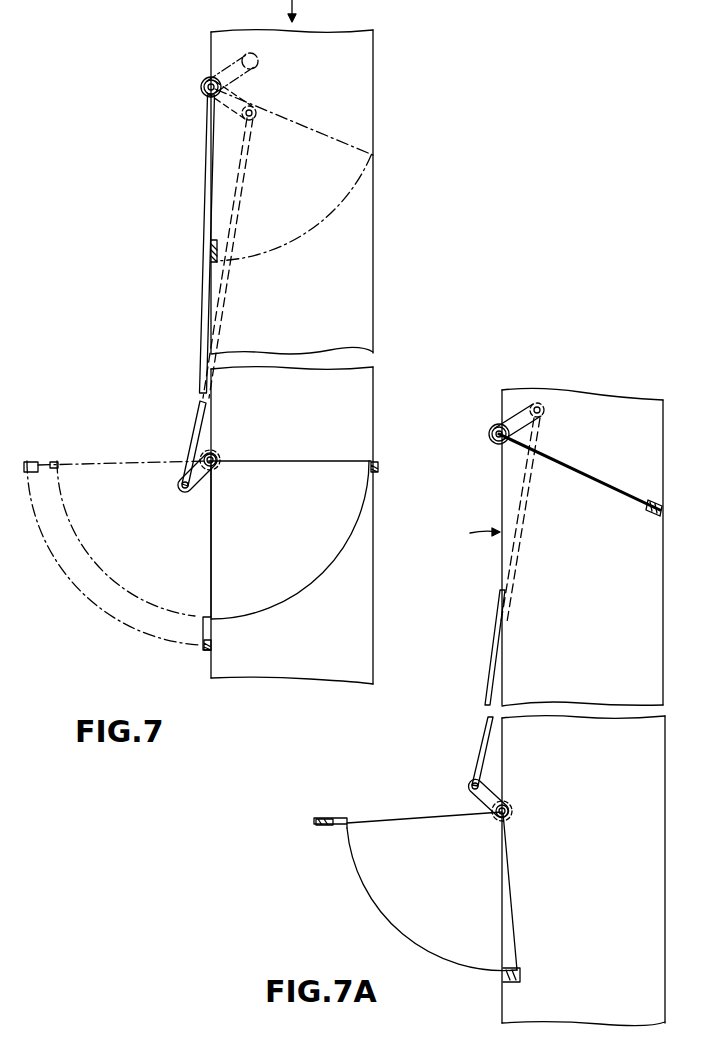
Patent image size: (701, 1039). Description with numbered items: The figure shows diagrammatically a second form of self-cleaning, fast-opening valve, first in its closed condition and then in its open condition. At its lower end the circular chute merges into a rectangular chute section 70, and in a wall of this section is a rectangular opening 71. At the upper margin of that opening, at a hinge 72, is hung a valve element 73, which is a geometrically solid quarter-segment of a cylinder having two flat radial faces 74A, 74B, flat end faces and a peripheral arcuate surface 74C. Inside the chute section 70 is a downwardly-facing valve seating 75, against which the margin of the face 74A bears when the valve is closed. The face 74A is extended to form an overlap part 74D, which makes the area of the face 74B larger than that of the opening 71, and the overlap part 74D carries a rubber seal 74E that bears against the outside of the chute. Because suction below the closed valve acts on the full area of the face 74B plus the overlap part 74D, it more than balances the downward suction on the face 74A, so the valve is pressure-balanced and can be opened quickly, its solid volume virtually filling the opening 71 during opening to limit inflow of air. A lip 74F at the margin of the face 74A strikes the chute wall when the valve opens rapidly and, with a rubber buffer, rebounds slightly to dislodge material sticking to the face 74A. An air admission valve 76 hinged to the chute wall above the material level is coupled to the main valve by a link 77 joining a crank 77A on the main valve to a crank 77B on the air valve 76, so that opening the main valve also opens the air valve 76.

In FIG. 7, the rectangular chute section 70 is at (352, 80).
In FIG. 7A, the rectangular chute section 70 is at (625, 402).
In FIG. 7, the rectangular opening 71 is at (202, 554).
In FIG. 7, the hinge 72 is at (216, 457).
In FIG. 7A, the hinge 72 is at (512, 812).
In FIG. 7, the valve element 73 is at (221, 551).
In FIG. 7A, the valve element 73 is at (396, 882).
In FIG. 7, the radial face 74A is at (320, 460).
In FIG. 7, the radial face 74B is at (103, 467).
In FIG. 7A, the radial face 74B is at (397, 821).
In FIG. 7, the peripheral arcuate surface 74C is at (303, 586).
In FIG. 7A, the peripheral arcuate surface 74C is at (452, 961).
In FIG. 7, the overlap part 74D is at (58, 462).
In FIG. 7A, the overlap part 74D is at (336, 817).
In FIG. 7, the rubber seal 74E is at (32, 462).
In FIG. 7A, the rubber seal 74E is at (319, 827).
In FIG. 7, the lip 74F is at (379, 468).
In FIG. 7A, the lip 74F is at (521, 972).
In FIG. 7, the valve seating 75 is at (376, 460).
In FIG. 7A, the valve seating 75 is at (662, 812).
In FIG. 7, the air admission valve 76 is at (210, 175).
In FIG. 7A, the air admission valve 76 is at (597, 480).
In FIG. 7, the link 77 is at (238, 216).
In FIG. 7A, the link 77 is at (516, 562).
In FIG. 7, the crank 77A is at (203, 480).
In FIG. 7A, the crank 77A is at (490, 796).
In FIG. 7, the crank 77B is at (238, 82).
In FIG. 7A, the crank 77B is at (522, 405).